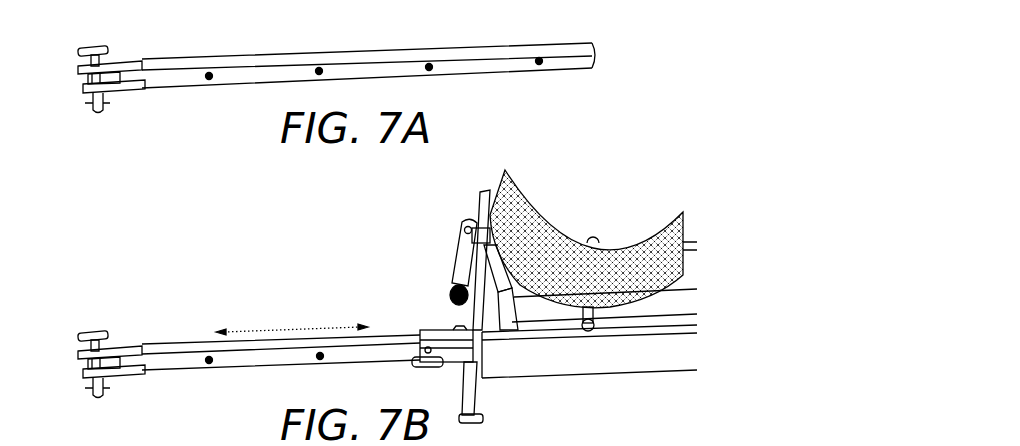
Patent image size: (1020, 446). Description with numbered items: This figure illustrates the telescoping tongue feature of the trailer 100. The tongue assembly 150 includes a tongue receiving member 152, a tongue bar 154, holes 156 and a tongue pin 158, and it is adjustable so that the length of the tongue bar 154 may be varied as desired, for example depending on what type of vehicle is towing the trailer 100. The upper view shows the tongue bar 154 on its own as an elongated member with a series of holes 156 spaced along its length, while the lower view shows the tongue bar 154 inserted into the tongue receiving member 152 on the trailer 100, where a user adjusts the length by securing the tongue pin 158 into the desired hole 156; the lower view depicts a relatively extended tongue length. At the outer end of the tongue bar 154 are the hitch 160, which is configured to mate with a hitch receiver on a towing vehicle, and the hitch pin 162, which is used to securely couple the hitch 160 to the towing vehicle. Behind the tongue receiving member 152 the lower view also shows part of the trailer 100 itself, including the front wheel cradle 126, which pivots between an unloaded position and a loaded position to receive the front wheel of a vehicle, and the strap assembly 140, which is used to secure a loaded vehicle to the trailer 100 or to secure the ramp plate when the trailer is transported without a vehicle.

In FIG. 7B, the trailer 100 is at (638, 170).
In FIG. 7B, the front wheel cradle 126 is at (552, 228).
In FIG. 7B, the strap assembly 140 is at (442, 209).
In FIG. 7B, the tongue assembly 150 is at (220, 344).
In FIG. 7B, the tongue receiving member 152 is at (427, 330).
In FIG. 7A, the tongue bar 154 is at (365, 52).
In FIG. 7B, the tongue bar 154 is at (160, 343).
In FIG. 7A, the holes 156 is at (207, 73).
In FIG. 7B, the holes 156 is at (318, 358).
In FIG. 7B, the tongue pin 158 is at (428, 368).
In FIG. 7A, the hitch 160 is at (85, 90).
In FIG. 7B, the hitch 160 is at (85, 374).
In FIG. 7A, the hitch pin 162 is at (78, 50).
In FIG. 7B, the hitch pin 162 is at (78, 335).